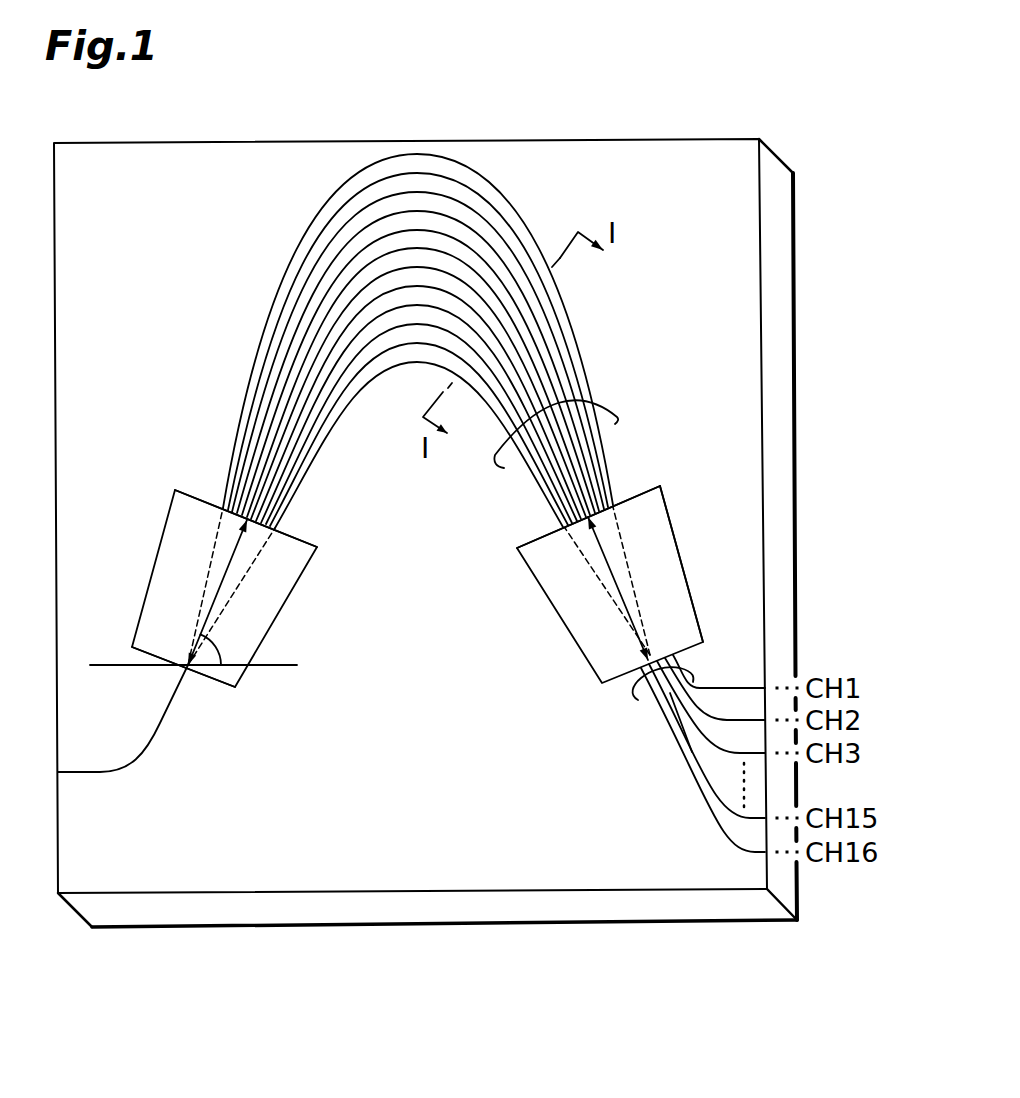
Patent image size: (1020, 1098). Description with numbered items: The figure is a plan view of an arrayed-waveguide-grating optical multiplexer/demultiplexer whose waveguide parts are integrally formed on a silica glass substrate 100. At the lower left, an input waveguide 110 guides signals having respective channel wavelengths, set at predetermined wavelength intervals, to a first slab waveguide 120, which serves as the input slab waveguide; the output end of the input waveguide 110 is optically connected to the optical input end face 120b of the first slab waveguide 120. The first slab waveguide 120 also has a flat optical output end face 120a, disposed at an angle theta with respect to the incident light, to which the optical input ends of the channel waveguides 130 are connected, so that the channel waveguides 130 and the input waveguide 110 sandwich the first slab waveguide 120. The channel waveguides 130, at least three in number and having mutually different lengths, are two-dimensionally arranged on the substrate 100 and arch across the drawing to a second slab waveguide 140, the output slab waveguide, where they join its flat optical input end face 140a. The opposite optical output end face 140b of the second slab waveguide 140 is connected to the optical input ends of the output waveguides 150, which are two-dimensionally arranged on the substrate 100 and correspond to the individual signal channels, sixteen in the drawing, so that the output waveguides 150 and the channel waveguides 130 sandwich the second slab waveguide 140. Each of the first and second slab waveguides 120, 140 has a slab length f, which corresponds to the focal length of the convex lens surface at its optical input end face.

The silica glass substrate 100 is at (723, 282).
The input waveguide 110 is at (154, 737).
The first slab waveguide 120 is at (274, 622).
The optical output end face 120a is at (198, 497).
The optical input end face 120b is at (148, 650).
The channel waveguides 130 is at (607, 400).
The second slab waveguide 140 is at (560, 622).
The optical input end face 140a is at (640, 492).
The optical output end face 140b is at (697, 617).
The output waveguides 150 is at (638, 698).